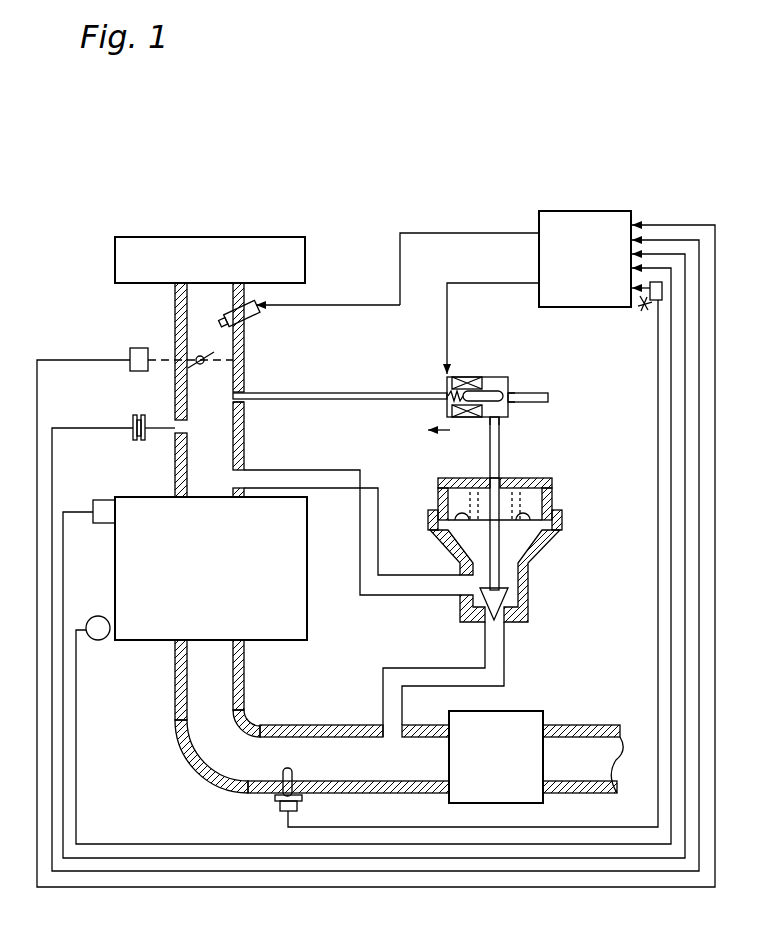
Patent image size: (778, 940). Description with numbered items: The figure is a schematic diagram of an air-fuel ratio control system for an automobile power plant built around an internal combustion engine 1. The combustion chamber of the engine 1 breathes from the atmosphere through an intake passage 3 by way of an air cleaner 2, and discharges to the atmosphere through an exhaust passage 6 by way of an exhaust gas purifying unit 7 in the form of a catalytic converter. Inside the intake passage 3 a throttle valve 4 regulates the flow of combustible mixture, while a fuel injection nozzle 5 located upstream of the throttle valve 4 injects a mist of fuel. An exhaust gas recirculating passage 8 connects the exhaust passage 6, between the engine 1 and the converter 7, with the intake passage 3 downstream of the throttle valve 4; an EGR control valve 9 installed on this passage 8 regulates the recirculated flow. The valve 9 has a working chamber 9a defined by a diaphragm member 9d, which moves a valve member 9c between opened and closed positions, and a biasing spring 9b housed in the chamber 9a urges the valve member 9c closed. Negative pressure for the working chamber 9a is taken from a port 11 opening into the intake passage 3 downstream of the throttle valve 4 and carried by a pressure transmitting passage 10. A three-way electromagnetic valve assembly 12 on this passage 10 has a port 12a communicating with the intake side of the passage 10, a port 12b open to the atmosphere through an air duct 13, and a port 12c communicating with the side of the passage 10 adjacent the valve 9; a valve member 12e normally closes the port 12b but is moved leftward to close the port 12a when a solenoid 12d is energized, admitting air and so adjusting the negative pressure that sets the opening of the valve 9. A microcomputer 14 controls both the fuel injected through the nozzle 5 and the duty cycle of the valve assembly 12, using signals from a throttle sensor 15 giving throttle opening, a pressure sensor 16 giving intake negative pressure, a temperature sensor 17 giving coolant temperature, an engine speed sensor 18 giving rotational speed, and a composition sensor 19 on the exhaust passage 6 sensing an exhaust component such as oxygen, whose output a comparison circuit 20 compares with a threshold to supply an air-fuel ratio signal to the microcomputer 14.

The internal combustion engine 1 is at (222, 593).
The air cleaner 2 is at (208, 237).
The intake passage 3 is at (214, 394).
The throttle valve 4 is at (220, 358).
The fuel injection nozzle 5 is at (257, 320).
The exhaust passage 6 is at (186, 745).
The exhaust gas purifying unit 7 is at (535, 711).
The exhaust gas recirculating passage 8 is at (362, 588).
The EGR control valve 9 is at (506, 592).
The working chamber 9a is at (540, 506).
The biasing spring 9b is at (473, 503).
The valve member 9c is at (506, 598).
The diaphragm member 9d is at (462, 508).
The pressure transmitting passage 10 is at (350, 393).
The port 11 is at (238, 403).
The three-way electromagnetic valve assembly 12 is at (462, 380).
The port 12a is at (450, 394).
The port 12b is at (515, 398).
The port 12c is at (503, 420).
The solenoid 12d is at (447, 408).
The valve member 12e is at (486, 396).
The air duct 13 is at (548, 398).
The microcomputer 14 is at (581, 211).
The throttle sensor 15 is at (133, 348).
The pressure sensor 16 is at (133, 424).
The temperature sensor 17 is at (103, 500).
The engine speed sensor 18 is at (100, 640).
The composition sensor 19 is at (278, 803).
The comparison circuit 20 is at (650, 302).